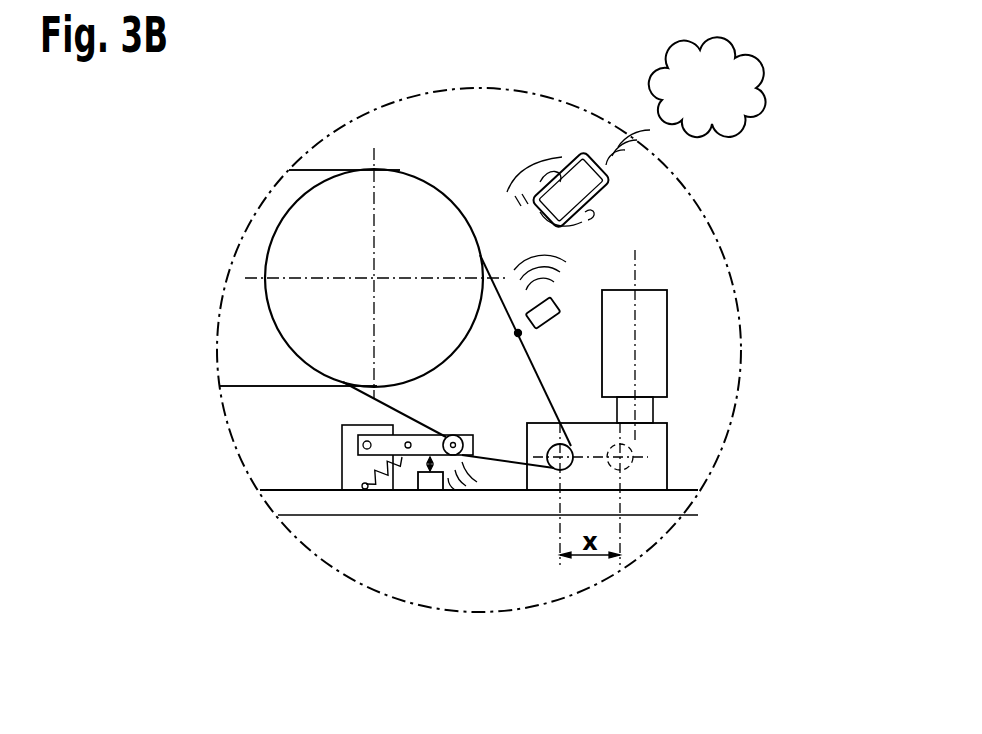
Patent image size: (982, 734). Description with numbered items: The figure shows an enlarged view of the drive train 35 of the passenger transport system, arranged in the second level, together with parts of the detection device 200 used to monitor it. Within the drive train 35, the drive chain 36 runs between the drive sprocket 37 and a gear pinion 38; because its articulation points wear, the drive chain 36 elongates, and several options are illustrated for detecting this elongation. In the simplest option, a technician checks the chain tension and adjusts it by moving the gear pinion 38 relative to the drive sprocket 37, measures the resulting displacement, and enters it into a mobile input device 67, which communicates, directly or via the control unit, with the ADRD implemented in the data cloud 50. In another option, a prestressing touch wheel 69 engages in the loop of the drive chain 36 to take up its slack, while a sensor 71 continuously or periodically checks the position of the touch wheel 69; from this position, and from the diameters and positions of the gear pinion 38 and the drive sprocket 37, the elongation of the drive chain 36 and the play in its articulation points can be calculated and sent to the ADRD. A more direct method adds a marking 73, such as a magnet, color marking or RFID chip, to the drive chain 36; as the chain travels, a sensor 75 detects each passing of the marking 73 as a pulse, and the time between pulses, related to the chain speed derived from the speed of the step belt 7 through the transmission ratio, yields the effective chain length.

The step belt 7 is at (318, 170).
The drive train 35 is at (464, 186).
The drive chain 36 is at (511, 330).
The drive sprocket 37 is at (412, 207).
The gear pinion 38 is at (556, 471).
The data cloud 50 is at (740, 82).
The mobile input device 67 is at (603, 200).
The prestressing touch wheel 69 is at (453, 434).
The sensor 71 is at (433, 490).
The marking 73 is at (518, 336).
The sensor 75 is at (549, 320).
The detection device 200 is at (575, 296).